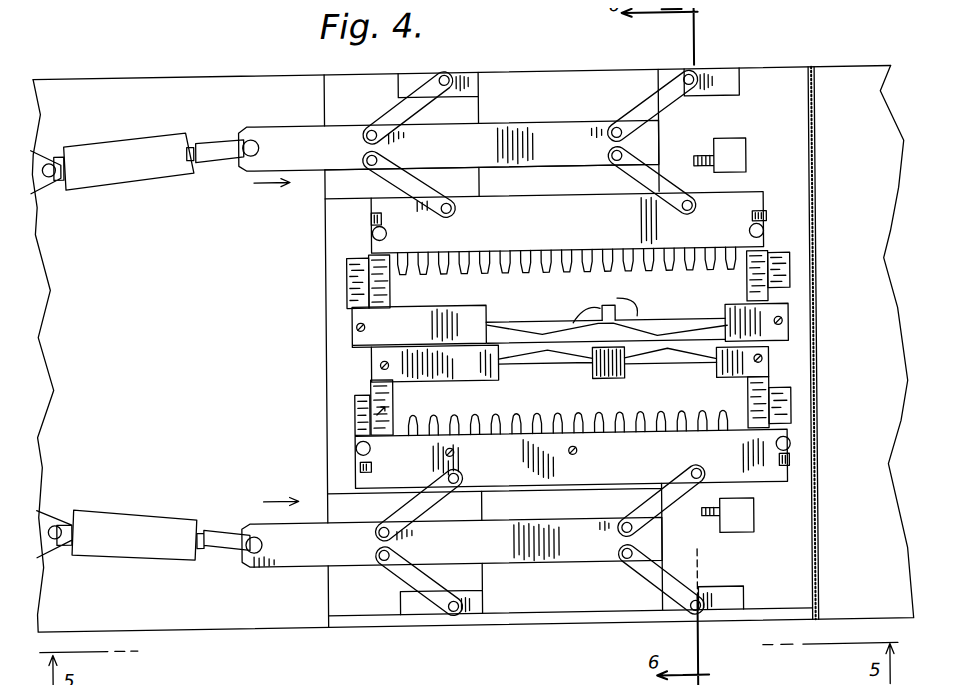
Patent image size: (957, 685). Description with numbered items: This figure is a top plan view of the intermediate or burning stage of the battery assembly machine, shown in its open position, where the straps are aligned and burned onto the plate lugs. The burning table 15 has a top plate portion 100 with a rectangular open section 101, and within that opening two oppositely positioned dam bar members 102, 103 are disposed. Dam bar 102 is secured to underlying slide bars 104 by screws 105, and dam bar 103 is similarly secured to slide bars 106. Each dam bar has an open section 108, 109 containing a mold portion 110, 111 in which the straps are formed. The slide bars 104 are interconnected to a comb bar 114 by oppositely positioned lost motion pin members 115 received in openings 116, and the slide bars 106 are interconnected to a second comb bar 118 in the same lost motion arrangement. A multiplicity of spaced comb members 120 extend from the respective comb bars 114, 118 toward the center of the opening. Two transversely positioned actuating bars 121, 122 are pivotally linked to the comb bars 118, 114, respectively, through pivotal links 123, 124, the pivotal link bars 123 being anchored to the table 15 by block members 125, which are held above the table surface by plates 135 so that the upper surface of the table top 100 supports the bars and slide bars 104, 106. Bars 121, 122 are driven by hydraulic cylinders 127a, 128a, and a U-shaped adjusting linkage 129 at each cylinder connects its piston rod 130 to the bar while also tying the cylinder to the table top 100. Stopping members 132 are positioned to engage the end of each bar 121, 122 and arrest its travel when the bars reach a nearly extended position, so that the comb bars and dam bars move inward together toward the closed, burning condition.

The burning table 15 is at (203, 65).
The top plate portion 100 is at (175, 281).
The rectangular open section 101 is at (372, 400).
The dam bar member 102 is at (418, 316).
The dam bar member 103 is at (460, 370).
The slide bars 104 is at (356, 284).
The screws 105 is at (358, 325).
The slide bars 106 is at (355, 423).
The open section 108 is at (488, 318).
The open section 109 is at (580, 374).
The mold portion 110 is at (605, 302).
The mold portion 111 is at (537, 360).
The comb bar 114 is at (510, 460).
The lost motion pin members 115 is at (387, 233).
The openings 116 is at (371, 218).
The comb bar 118 is at (540, 231).
The comb members 120 is at (563, 273).
The transversely positioned bar 121 is at (300, 124).
The transversely positioned bar 122 is at (321, 557).
The pivotal links 123 is at (412, 92).
The pivotal links 124 is at (429, 195).
The block members 125 is at (465, 82).
The upper cylinder 127a is at (137, 143).
The lower cylinder 128a is at (133, 539).
The U-shaped adjusting linkage 129 is at (53, 150).
The piston rod 130 is at (200, 135).
The stopping members 132 is at (733, 151).
The plates 135 is at (333, 245).